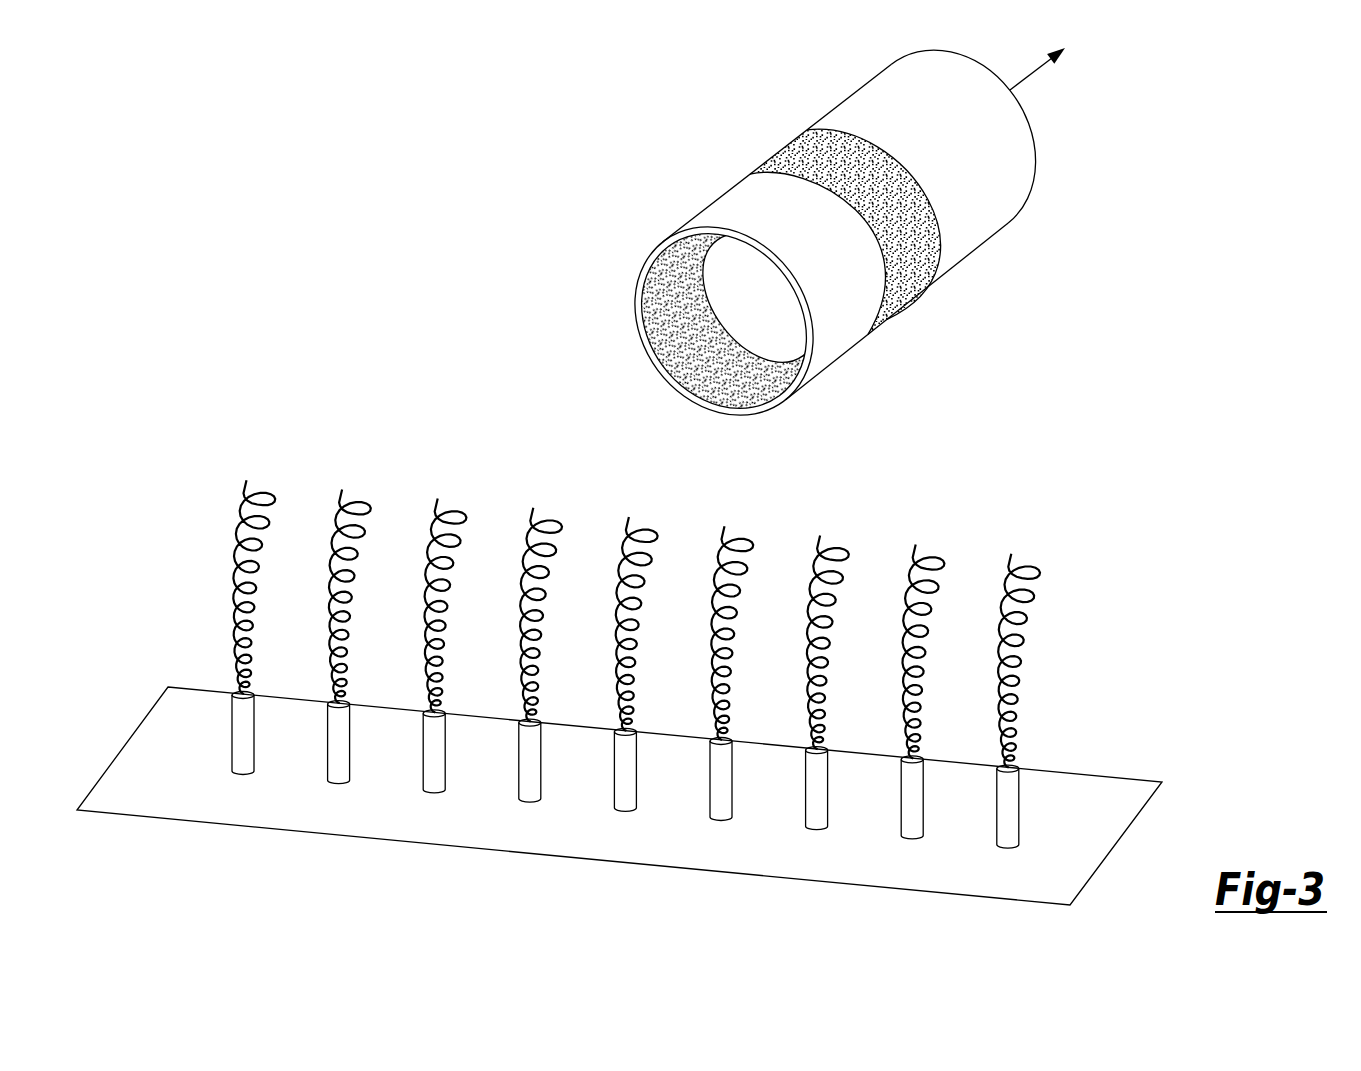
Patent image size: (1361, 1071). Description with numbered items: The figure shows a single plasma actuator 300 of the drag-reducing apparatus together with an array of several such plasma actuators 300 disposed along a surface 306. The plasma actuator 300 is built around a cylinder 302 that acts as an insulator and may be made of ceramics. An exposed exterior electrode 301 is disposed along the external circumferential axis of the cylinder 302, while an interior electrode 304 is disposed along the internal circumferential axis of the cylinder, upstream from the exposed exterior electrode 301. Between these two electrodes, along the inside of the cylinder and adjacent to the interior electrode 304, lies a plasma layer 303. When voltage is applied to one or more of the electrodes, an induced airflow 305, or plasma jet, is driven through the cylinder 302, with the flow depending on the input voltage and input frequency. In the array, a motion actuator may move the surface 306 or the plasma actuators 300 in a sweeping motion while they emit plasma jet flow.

The plasma actuator 300 is at (670, 431).
The exposed exterior electrode 301 is at (805, 160).
The cylinder 302 is at (868, 98).
The plasma layer 303 is at (675, 327).
The interior electrode 304 is at (719, 387).
The induced airflow 305 is at (1033, 68).
The surface 306 is at (1068, 882).